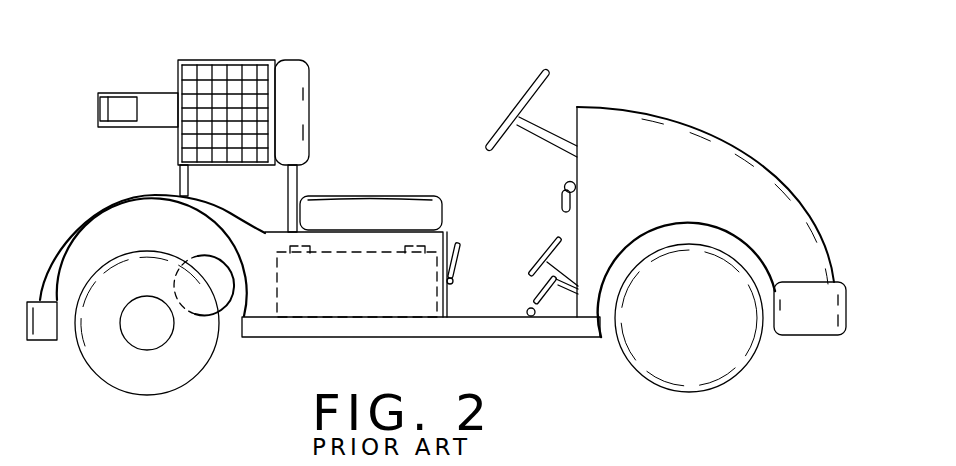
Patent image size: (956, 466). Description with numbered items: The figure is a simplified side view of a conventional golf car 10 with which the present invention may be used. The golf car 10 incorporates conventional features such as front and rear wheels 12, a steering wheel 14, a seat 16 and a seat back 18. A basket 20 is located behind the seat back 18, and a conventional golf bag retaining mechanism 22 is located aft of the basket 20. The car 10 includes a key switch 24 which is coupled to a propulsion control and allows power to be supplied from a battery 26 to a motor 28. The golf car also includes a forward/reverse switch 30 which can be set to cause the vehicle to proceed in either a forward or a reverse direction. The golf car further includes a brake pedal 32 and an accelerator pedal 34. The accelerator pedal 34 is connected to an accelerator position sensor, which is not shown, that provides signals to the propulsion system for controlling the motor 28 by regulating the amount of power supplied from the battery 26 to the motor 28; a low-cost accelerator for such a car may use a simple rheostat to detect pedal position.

The golf car 10 is at (674, 101).
The front and rear wheels 12 is at (103, 370).
The steering wheel 14 is at (527, 86).
The seat 16 is at (370, 197).
The seat back 18 is at (287, 70).
The basket 20 is at (208, 74).
The golf bag retaining mechanism 22 is at (117, 93).
The key switch 24 is at (565, 186).
The battery 26 is at (333, 297).
The motor 28 is at (217, 312).
The forward/reverse switch 30 is at (461, 252).
The brake pedal 32 is at (547, 244).
The accelerator pedal 34 is at (537, 299).